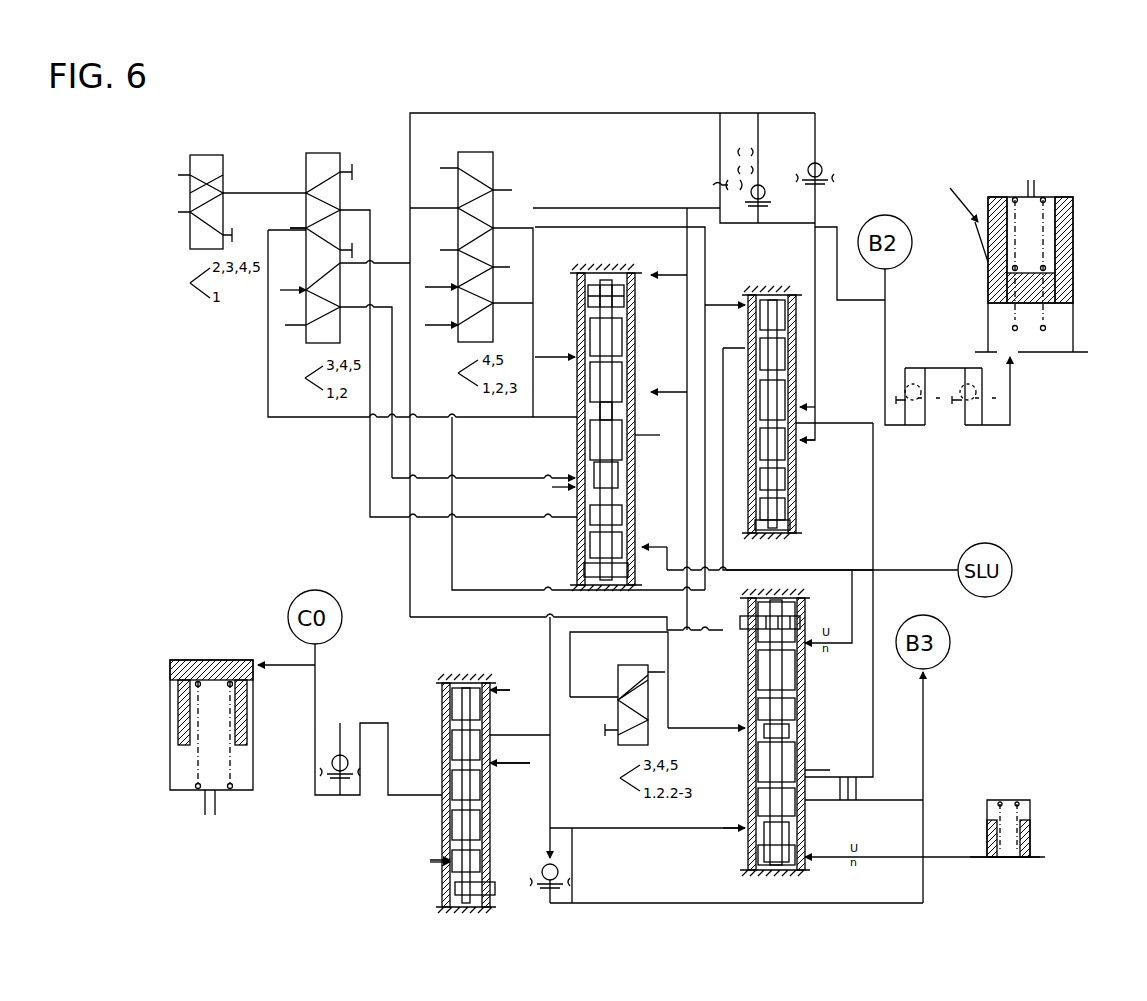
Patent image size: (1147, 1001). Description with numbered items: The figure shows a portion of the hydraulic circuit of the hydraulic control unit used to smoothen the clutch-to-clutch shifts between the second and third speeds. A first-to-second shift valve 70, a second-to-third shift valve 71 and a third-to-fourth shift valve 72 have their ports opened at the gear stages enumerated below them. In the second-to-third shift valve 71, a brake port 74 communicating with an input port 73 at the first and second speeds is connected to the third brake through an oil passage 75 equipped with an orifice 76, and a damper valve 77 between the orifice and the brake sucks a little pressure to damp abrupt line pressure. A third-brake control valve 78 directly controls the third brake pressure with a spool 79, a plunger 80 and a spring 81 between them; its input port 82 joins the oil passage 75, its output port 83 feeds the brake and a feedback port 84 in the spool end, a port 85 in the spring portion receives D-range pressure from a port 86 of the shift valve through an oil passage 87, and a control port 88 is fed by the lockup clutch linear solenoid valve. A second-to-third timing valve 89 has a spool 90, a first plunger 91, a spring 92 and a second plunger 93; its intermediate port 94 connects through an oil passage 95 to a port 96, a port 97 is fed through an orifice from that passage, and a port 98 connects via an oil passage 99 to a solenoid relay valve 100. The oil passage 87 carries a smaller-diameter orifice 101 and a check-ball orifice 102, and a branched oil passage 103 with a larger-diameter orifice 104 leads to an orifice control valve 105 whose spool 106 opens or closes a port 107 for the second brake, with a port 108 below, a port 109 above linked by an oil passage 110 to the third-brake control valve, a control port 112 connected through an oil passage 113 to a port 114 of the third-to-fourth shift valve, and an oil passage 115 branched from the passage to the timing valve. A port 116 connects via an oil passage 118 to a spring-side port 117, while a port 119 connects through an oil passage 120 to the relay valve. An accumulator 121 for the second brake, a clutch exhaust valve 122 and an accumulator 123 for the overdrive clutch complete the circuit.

The 1–2 shift valve 70 is at (214, 152).
The 2–3 shift valve 71 is at (326, 146).
The 3–4 shift valve 72 is at (493, 150).
The input port 73 is at (306, 193).
The brake port 74 is at (341, 210).
The oil passage 75 is at (373, 478).
The orifice 76 is at (568, 866).
The damper valve 77 is at (1030, 825).
The B-3 control valve 78 is at (758, 743).
The spool 79 is at (803, 758).
The plunger 80 is at (806, 672).
The spring 81 is at (748, 735).
The input port 82 is at (745, 828).
The output port 83 is at (800, 805).
The feedback port 84 is at (800, 870).
The port 85 is at (800, 727).
The port 86 is at (362, 263).
The oil passage 87 is at (455, 113).
The control port 88 is at (805, 632).
The 2–3 timing valve 89 is at (593, 414).
The spool 90 is at (636, 337).
The first plunger 91 is at (636, 521).
The spring 92 is at (636, 488).
The second plunger 93 is at (592, 273).
The intermediate port 94 is at (560, 420).
The oil passage 95 is at (290, 418).
The port 96 is at (306, 228).
The port 97 is at (585, 370).
The port 98 is at (636, 385).
The oil passage 99 is at (570, 648).
The solenoid relay valve 100 is at (612, 750).
The smaller-diameter orifice 101 is at (713, 191).
The orifice 102 is at (745, 170).
The oil passage 103 is at (817, 126).
The larger-diameter orifice 104 is at (823, 168).
The orifice control valve 105 is at (802, 540).
The spool 106 is at (792, 335).
The port 107 is at (798, 425).
The port 108 is at (795, 452).
The port 109 is at (800, 407).
The oil passage 110 is at (873, 520).
The control port 112 is at (802, 413).
The oil passage 113 is at (567, 208).
The port 114 is at (495, 305).
The oil passage 115 is at (452, 565).
The port 116 is at (360, 307).
The port 117 is at (560, 488).
The oil passage 118 is at (373, 517).
The port 119 is at (496, 228).
The oil passage 120 is at (614, 227).
The accumulator 121 is at (1073, 330).
The C-0 exhaust valve 122 is at (455, 680).
The accumulator 123 is at (253, 752).